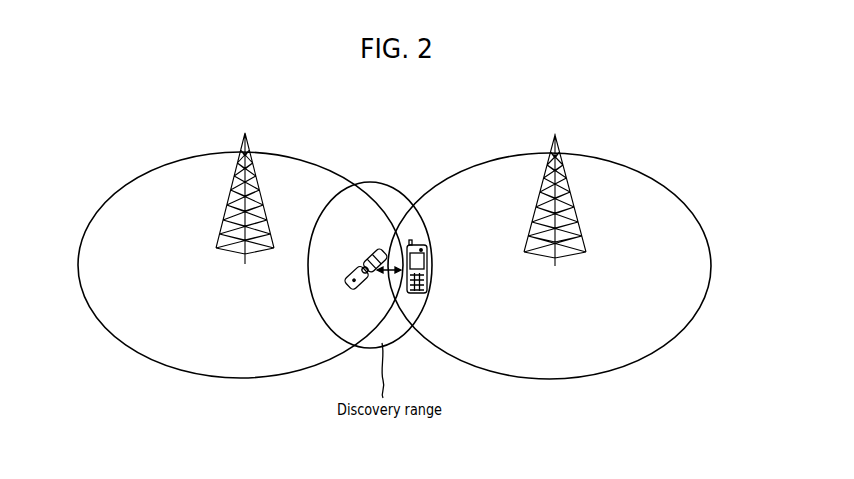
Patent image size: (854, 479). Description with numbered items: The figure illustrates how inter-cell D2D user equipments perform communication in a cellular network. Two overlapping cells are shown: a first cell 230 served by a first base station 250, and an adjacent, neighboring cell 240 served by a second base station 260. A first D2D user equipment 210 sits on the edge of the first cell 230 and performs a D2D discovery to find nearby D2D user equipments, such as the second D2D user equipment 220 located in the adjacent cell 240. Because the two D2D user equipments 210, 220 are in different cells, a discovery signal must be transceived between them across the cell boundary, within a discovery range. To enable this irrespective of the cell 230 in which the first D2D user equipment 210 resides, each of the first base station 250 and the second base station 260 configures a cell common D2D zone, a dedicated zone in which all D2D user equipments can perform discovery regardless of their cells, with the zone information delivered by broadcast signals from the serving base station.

The D2D user equipment 1 210 is at (365, 243).
The D2D user equipment 2 220 is at (419, 247).
The cell 230 is at (147, 180).
The adjacent cell 240 is at (645, 184).
The base station 1 250 is at (245, 153).
The base station 2 260 is at (557, 153).